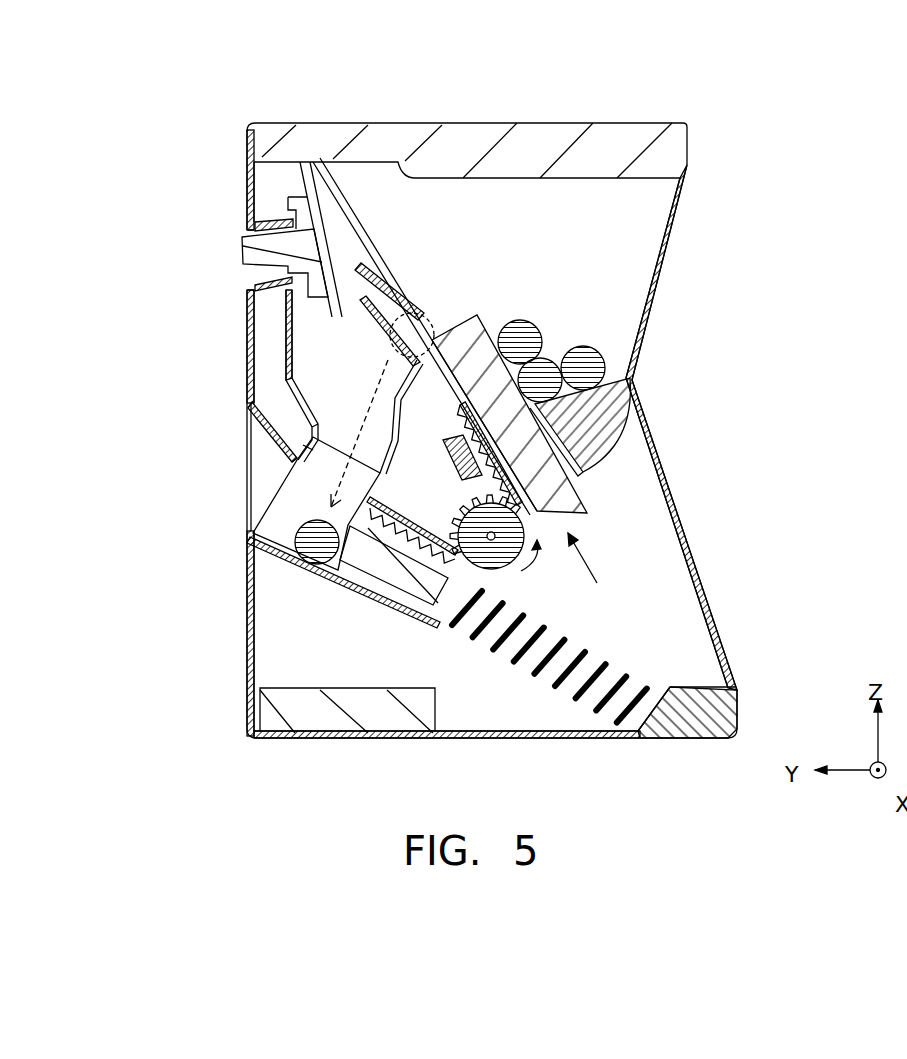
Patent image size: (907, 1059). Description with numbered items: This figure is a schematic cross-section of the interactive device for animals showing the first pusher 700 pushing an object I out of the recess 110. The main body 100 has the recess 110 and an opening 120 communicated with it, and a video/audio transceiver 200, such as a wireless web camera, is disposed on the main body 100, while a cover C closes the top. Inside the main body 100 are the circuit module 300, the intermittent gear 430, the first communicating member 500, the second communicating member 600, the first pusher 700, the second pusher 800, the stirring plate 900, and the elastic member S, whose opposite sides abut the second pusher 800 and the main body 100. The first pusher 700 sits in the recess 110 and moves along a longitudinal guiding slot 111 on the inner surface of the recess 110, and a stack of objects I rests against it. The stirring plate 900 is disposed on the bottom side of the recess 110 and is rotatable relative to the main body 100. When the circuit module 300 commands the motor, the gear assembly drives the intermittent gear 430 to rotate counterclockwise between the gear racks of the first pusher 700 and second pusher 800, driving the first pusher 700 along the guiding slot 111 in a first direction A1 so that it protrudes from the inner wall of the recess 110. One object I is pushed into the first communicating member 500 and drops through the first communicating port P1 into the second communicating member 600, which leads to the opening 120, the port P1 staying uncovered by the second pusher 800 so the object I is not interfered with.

The main body 100 is at (240, 150).
The recess 110 is at (602, 288).
The longitudinal guiding slot 111 is at (448, 323).
The opening 120 is at (263, 442).
The video/audio transceiver 200 is at (290, 255).
The circuit module 300 is at (300, 718).
The intermittent gear 430 is at (495, 572).
The first communicating member 500 is at (328, 366).
The second communicating member 600 is at (303, 492).
The first pusher 700 is at (553, 493).
The second pusher 800 is at (383, 583).
The stirring plate 900 is at (603, 423).
The first direction A1 is at (583, 560).
The cover C is at (567, 122).
The object I is at (512, 318).
The first communicating port P1 is at (313, 412).
The elastic member S is at (605, 700).